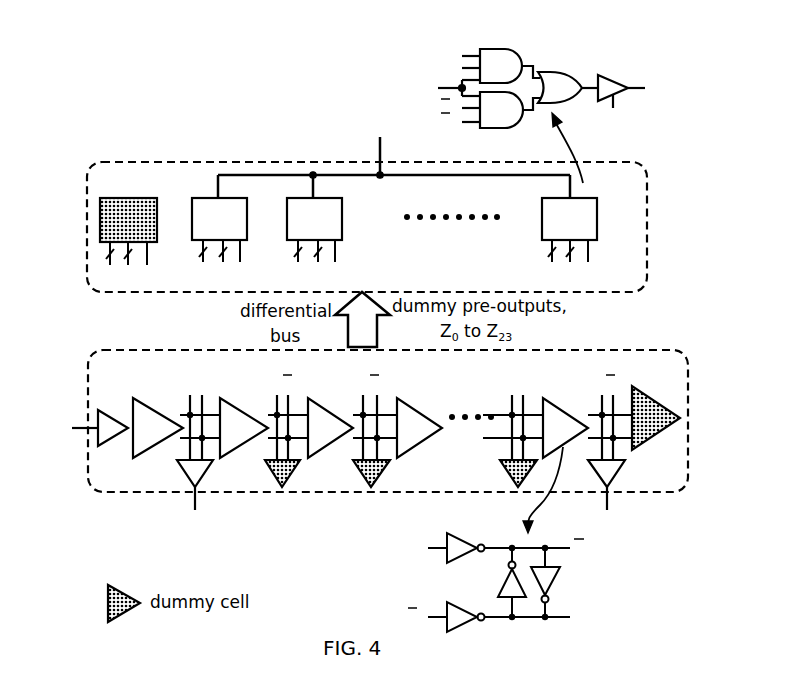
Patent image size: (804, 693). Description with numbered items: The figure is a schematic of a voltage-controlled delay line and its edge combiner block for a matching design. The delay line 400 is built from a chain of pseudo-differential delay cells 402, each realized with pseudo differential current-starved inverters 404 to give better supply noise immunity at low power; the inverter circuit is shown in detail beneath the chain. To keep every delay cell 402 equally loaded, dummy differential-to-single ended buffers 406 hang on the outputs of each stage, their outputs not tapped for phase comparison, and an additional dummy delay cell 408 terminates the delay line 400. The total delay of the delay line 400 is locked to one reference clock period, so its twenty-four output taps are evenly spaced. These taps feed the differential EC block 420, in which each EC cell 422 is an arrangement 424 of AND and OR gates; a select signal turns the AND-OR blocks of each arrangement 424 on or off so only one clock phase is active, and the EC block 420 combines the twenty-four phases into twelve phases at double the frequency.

The delay line (VCDL) 400 is at (88, 363).
The delay cell 402 is at (327, 460).
The pseudo differential current-starved inverter 404 is at (605, 575).
The dummy differential-to-single ended buffer 406 is at (256, 490).
The dummy delay cell 408 is at (645, 388).
The differential EC block 420 is at (87, 183).
The EC cell 422 is at (597, 207).
The arrangement of logic gates 424 is at (570, 56).